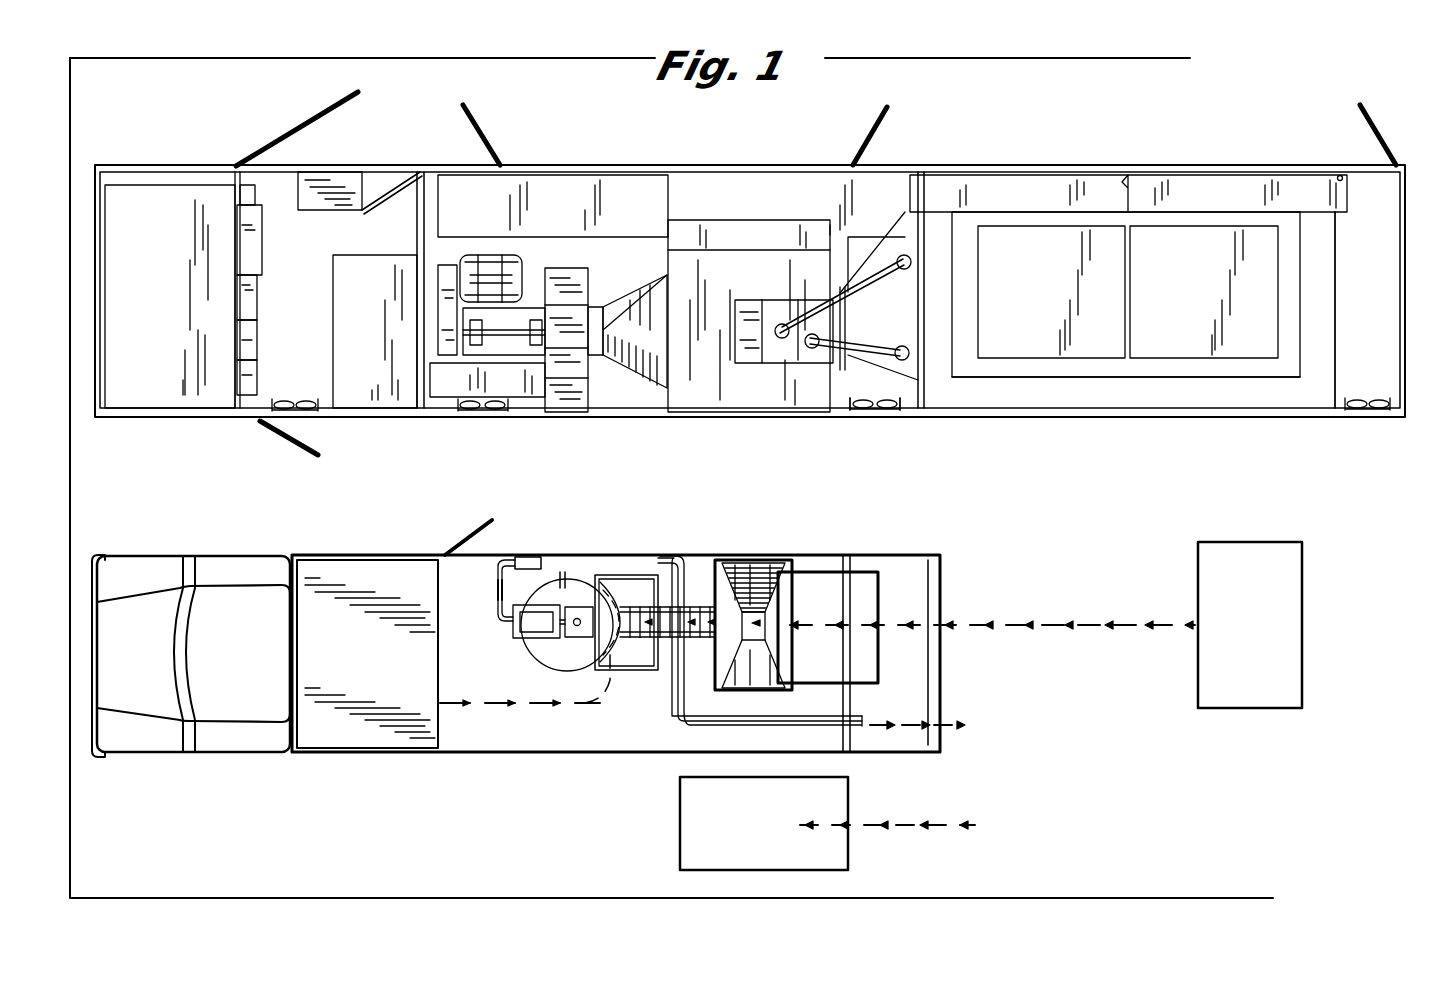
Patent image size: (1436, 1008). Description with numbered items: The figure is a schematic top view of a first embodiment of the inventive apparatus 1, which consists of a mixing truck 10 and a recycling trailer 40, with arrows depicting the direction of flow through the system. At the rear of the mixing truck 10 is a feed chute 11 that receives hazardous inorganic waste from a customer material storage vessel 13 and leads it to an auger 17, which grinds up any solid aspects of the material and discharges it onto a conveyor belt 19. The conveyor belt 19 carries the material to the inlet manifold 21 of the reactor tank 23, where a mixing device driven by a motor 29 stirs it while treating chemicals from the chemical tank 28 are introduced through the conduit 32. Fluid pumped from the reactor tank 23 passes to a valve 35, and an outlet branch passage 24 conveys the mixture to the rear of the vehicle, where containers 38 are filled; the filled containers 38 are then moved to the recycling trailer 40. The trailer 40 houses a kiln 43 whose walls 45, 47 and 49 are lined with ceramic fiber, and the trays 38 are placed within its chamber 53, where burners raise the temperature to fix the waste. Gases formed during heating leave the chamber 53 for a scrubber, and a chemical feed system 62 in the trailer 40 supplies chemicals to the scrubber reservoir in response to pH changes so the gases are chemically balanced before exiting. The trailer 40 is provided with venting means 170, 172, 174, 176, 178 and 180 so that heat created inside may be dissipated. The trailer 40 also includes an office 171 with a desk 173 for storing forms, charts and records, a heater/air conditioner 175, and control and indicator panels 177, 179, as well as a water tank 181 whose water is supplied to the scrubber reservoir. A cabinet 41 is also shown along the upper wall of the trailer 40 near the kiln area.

The inventive apparatus 1 is at (1175, 787).
The mixing truck 10 is at (424, 752).
The feed chute 11 is at (858, 572).
The customer material storage vessel 13 is at (1237, 634).
The auger 17 is at (752, 620).
The conveyor belt 19 is at (660, 600).
The inlet manifold 21 is at (620, 575).
The reactor tank 23 is at (557, 648).
The second branch passage 24 is at (675, 700).
The chemical tank 28 is at (356, 664).
The motor 29 is at (577, 637).
The conduit 32 is at (545, 707).
The valve 35 is at (544, 557).
The container 38 is at (1038, 299).
The recycling trailer 40 is at (565, 160).
The cabinet 41 is at (1140, 190).
The kiln 43 is at (1335, 312).
The kiln wall 45 is at (1306, 306).
The kiln wall 47 is at (1135, 399).
The kiln wall 49 is at (922, 306).
The chamber 53 is at (1128, 375).
The chemical feed system 62 is at (876, 248).
The venting means 170 is at (487, 128).
The office 171 is at (281, 359).
The venting means 172 is at (348, 96).
The desk 173 is at (358, 344).
The venting means 174 is at (292, 457).
The heater/air conditioner 175 is at (326, 216).
The venting means 176 is at (1366, 118).
The control and indicator panel 177 is at (258, 255).
The venting means 178 is at (865, 129).
The control and indicator panel 179 is at (250, 190).
The venting means 180 is at (877, 420).
The water tank 181 is at (152, 316).